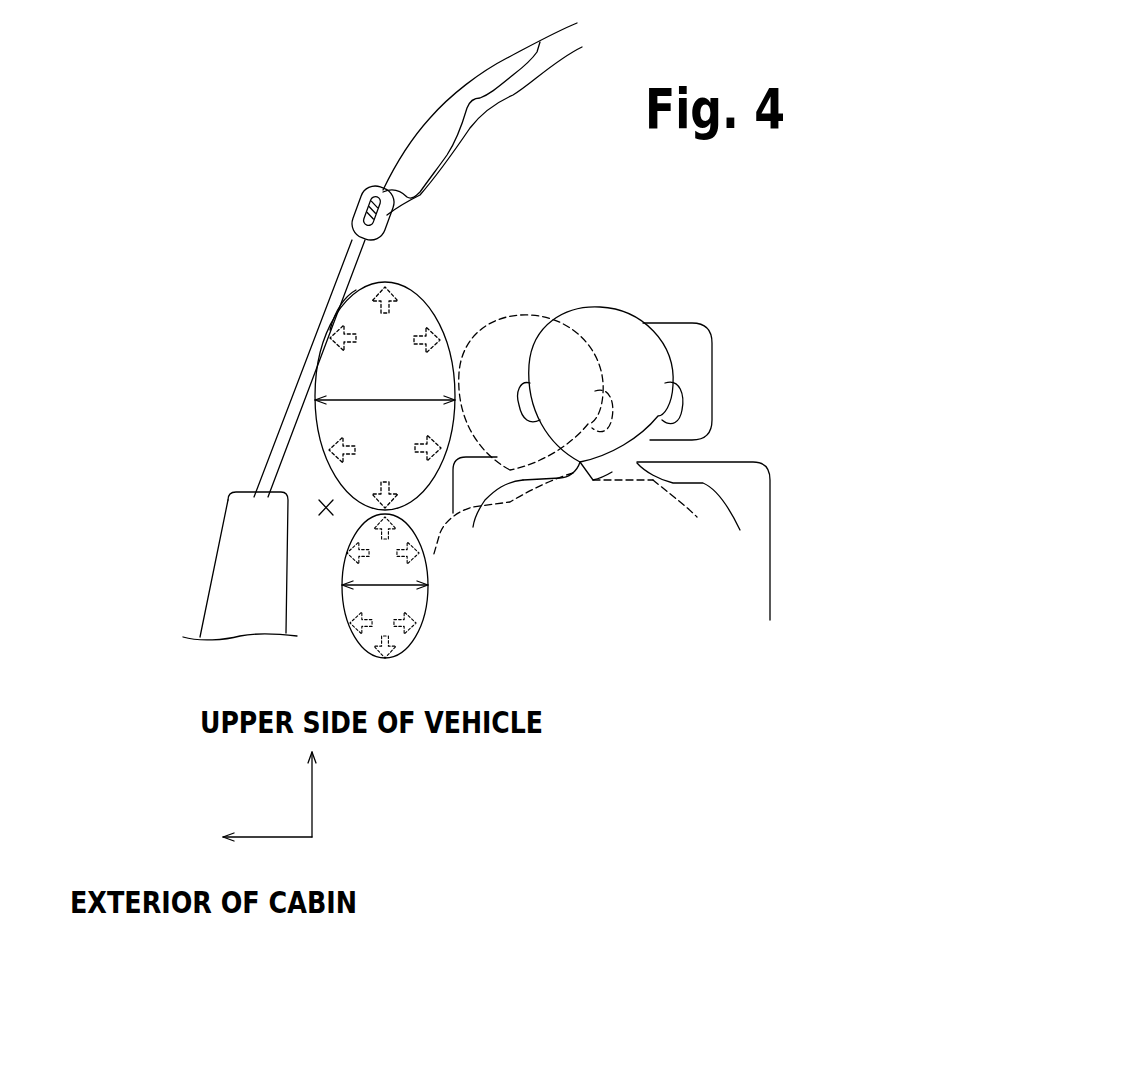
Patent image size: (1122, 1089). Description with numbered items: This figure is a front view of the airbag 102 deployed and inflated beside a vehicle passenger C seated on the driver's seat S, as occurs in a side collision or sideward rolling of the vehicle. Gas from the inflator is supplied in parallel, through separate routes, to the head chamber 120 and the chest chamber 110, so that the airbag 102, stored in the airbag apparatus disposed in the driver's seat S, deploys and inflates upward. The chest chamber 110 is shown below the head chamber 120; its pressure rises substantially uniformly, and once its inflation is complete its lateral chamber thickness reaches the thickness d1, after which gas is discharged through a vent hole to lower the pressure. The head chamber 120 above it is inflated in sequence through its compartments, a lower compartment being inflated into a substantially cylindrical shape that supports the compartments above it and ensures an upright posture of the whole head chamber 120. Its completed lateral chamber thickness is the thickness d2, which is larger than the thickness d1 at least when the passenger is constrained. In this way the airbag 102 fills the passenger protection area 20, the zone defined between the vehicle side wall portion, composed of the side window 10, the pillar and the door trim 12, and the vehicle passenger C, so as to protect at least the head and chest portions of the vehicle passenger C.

The side window 10 is at (347, 247).
The door trim 12 is at (287, 538).
The passenger protection area 20 is at (322, 504).
The airbag 102 is at (418, 312).
The head chamber 120 is at (355, 290).
The chest chamber 110 is at (342, 563).
The chamber thickness of the head chamber d2 is at (363, 400).
The chamber thickness of the chest chamber d1 is at (383, 588).
The vehicle passenger C is at (540, 317).
The driver's seat S is at (714, 458).